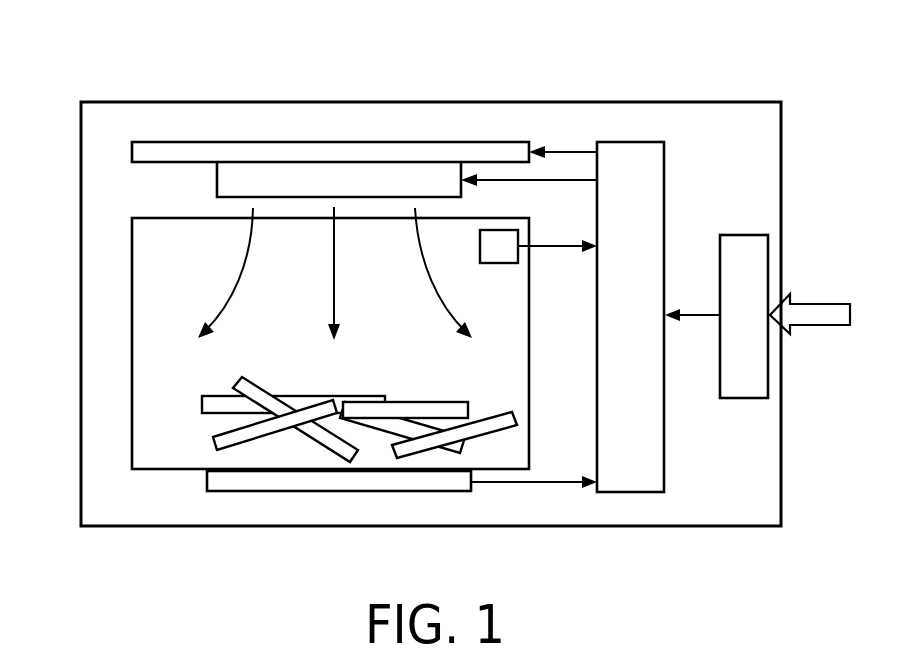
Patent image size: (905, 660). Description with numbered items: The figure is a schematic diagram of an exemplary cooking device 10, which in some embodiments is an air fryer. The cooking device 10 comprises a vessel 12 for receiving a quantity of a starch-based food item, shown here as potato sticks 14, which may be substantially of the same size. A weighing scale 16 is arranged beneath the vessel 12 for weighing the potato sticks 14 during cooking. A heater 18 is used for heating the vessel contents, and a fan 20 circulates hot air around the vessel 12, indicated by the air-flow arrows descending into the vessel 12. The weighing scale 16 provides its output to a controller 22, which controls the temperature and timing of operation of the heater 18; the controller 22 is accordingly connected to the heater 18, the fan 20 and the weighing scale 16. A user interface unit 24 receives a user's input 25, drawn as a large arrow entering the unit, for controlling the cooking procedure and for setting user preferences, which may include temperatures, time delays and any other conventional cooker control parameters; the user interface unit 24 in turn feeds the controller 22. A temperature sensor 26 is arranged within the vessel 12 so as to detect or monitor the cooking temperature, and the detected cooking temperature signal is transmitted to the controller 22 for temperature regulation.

The cooking device 10 is at (518, 102).
The vessel 12 is at (132, 268).
The potato sticks 14 is at (202, 404).
The weighing scale 16 is at (207, 482).
The heater 18 is at (132, 152).
The fan 20 is at (336, 177).
The controller 22 is at (630, 152).
The user interface unit 24 is at (768, 248).
The user's input 25 is at (824, 326).
The temperature sensor 26 is at (500, 263).